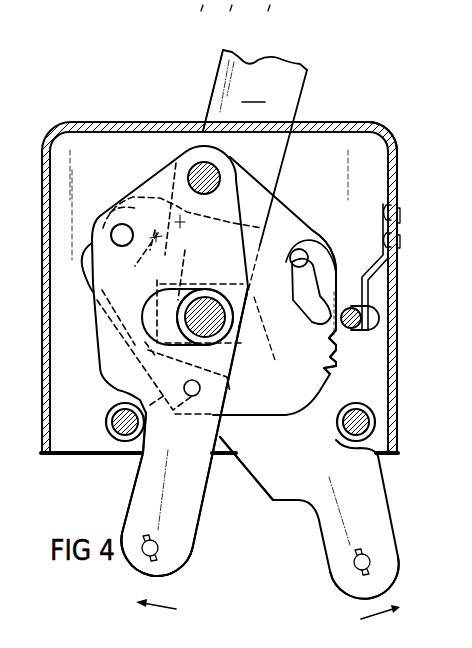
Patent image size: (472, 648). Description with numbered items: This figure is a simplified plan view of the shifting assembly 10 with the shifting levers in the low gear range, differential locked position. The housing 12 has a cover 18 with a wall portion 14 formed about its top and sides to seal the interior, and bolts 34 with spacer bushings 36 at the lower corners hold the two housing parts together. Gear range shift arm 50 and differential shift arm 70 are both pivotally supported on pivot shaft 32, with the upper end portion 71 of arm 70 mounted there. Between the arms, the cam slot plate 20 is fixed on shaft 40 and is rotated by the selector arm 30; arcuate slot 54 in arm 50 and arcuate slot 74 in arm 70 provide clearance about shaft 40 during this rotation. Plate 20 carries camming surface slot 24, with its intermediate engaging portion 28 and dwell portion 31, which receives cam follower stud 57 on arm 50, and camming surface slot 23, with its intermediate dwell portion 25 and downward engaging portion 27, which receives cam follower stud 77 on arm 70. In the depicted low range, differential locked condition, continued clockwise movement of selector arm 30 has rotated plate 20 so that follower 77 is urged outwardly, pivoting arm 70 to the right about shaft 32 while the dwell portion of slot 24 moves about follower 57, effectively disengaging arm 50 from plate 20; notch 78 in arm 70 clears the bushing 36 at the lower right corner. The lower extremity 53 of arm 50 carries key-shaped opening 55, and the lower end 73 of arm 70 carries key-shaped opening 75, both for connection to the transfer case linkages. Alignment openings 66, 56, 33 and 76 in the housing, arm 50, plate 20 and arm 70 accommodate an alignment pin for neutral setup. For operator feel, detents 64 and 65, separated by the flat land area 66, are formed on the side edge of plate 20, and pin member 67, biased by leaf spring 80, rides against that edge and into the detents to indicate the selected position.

The shifting assembly 10 is at (322, 93).
The housing 12 is at (71, 153).
The wall portion 14 is at (42, 342).
The cover 18 is at (392, 129).
The cam slot plate 20 is at (327, 236).
The camming surface slot 23 is at (340, 276).
The camming surface slot 24 is at (144, 254).
The intermediate dwell portion 25 is at (292, 287).
The engaging portion 27 is at (308, 312).
The intermediate engaging portion 28 is at (133, 190).
The selector arm 30 is at (252, 167).
The dwell portion 31 is at (205, 290).
The pivot shaft 32 is at (200, 170).
The alignment opening 33 is at (159, 433).
The bolts 34 is at (112, 417).
The bushings 36 is at (110, 427).
The shaft 40 is at (205, 296).
The gear range shift arm 50 is at (203, 528).
The lower extremity 53 is at (132, 560).
The arcuate slot 54 is at (163, 309).
The key-shaped opening 55 is at (160, 551).
The alignment opening 56 is at (192, 396).
The cam follower stud 57 is at (111, 236).
The detent 64 is at (338, 338).
The detent 65 is at (329, 369).
The flat or land area 66 is at (337, 357).
The pin member 67 is at (380, 315).
The differential shift arm 70 is at (380, 516).
The upper end portion 71 is at (233, 160).
The lower end 73 is at (386, 574).
The arcuate slot 74 is at (272, 342).
The key-shaped opening 75 is at (370, 561).
The alignment opening 76 is at (247, 417).
The cam follower stud 77 is at (303, 252).
The notch 78 is at (346, 437).
The leaf spring 80 is at (369, 292).